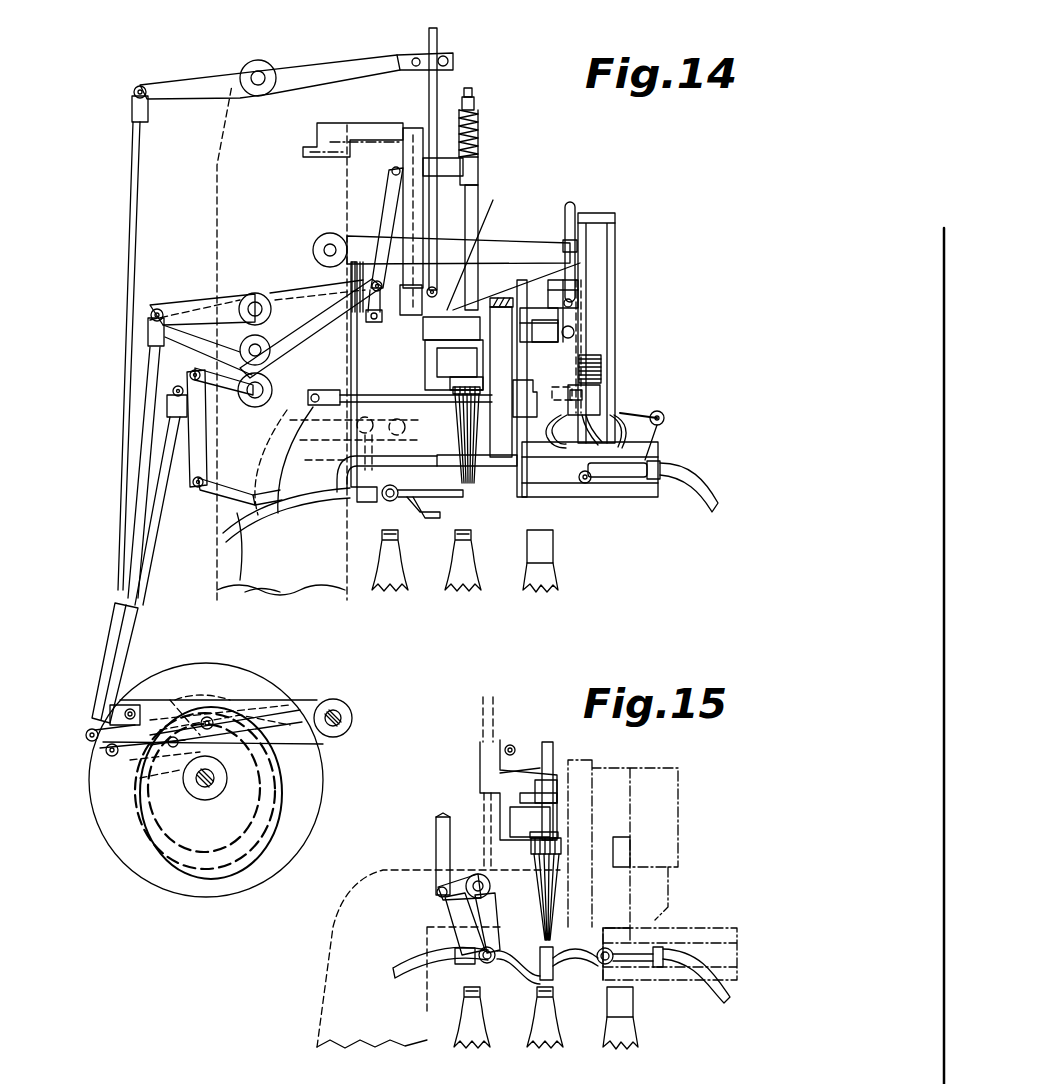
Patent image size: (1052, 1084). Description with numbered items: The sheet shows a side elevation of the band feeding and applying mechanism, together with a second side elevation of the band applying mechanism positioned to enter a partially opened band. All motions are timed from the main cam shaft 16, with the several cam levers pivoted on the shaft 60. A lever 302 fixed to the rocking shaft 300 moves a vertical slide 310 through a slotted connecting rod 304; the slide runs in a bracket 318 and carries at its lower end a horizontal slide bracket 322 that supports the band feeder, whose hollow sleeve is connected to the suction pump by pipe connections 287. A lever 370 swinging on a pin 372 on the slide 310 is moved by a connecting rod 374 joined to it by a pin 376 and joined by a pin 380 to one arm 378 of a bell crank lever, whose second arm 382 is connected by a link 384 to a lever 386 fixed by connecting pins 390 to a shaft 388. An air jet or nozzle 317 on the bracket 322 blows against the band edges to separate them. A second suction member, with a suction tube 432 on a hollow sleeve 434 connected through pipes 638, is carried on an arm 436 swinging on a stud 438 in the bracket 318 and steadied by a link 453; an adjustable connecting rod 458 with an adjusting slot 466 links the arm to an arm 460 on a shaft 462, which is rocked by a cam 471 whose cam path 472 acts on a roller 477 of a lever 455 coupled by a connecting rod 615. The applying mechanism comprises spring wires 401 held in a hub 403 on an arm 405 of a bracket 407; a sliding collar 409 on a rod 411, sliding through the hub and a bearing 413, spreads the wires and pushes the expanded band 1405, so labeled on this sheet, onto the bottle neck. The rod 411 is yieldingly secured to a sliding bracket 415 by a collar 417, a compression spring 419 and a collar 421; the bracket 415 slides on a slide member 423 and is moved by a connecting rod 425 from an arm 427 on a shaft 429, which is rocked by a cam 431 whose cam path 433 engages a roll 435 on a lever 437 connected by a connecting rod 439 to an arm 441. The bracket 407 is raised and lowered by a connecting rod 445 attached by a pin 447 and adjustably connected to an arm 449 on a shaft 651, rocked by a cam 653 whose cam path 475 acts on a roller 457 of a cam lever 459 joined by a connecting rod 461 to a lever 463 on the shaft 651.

In FIG. 14, the main cam shaft 16 is at (205, 780).
In FIG. 14, the shaft 60 is at (345, 710).
In FIG. 14, the pipe connections 287 is at (712, 475).
In FIG. 15, the pipe connections 287 is at (728, 1005).
In FIG. 14, the shaft 300 is at (325, 245).
In FIG. 14, the lever 302 is at (493, 243).
In FIG. 14, the slotted connecting rod 304 is at (572, 205).
In FIG. 15, the vertical slide 310 is at (668, 912).
In FIG. 14, the air jet or nozzle 317 is at (633, 410).
In FIG. 14, the bracket 318 is at (240, 560).
In FIG. 15, the bracket 318 is at (320, 1012).
In FIG. 14, the horizontal slide bracket 322 is at (647, 487).
In FIG. 15, the horizontal slide bracket 322 is at (667, 987).
In FIG. 14, the lever 370 is at (548, 380).
In FIG. 14, the pin 372 is at (577, 320).
In FIG. 14, the connecting rod 374 is at (353, 390).
In FIG. 14, the pin 376 is at (603, 392).
In FIG. 14, the arm of bell crank lever 378 is at (290, 450).
In FIG. 14, the pin 380 is at (325, 396).
In FIG. 14, the second arm of bell crank lever 382 is at (233, 490).
In FIG. 14, the link 384 is at (195, 452).
In FIG. 14, the lever 386 is at (250, 373).
In FIG. 14, the shaft 388 is at (258, 376).
In FIG. 14, the connecting pins 390 is at (190, 388).
In FIG. 14, the spring wires 401 is at (470, 485).
In FIG. 15, the spring wires 401 is at (553, 895).
In FIG. 14, the hub 403 is at (398, 428).
In FIG. 15, the hub 403 is at (565, 833).
In FIG. 14, the arm 405 is at (392, 412).
In FIG. 15, the arm 405 is at (515, 818).
In FIG. 14, the bracket 407 is at (465, 298).
In FIG. 15, the bracket 407 is at (505, 770).
In FIG. 14, the sliding collar 409 is at (587, 350).
In FIG. 15, the sliding collar 409 is at (560, 845).
In FIG. 14, the rod 411 is at (473, 205).
In FIG. 15, the rod 411 is at (553, 750).
In FIG. 14, the bearing 413 is at (547, 333).
In FIG. 15, the bearing 413 is at (557, 790).
In FIG. 14, the sliding bracket 415 is at (423, 150).
In FIG. 14, the collar 417 is at (477, 160).
In FIG. 14, the compression spring 419 is at (478, 125).
In FIG. 14, the collar 421 is at (474, 100).
In FIG. 14, the slide member 423 is at (385, 128).
In FIG. 14, the connecting rod 425 is at (388, 200).
In FIG. 14, the arm 427 is at (265, 362).
In FIG. 14, the shaft 429 is at (152, 318).
In FIG. 14, the cam 431 is at (135, 870).
In FIG. 14, the suction tube 432 is at (420, 527).
In FIG. 14, the cam path 433 is at (140, 790).
In FIG. 14, the hollow sleeve 434 is at (360, 530).
In FIG. 14, the roll 435 is at (318, 760).
In FIG. 14, the arm 436 is at (350, 508).
In FIG. 15, the arm 436 is at (440, 912).
In FIG. 14, the lever 437 is at (300, 710).
In FIG. 14, the stud 438 is at (300, 410).
In FIG. 14, the connecting rod 439 is at (72, 664).
In FIG. 14, the arm 441 is at (230, 348).
In FIG. 14, the connecting rod 445 is at (437, 85).
In FIG. 14, the pin 447 is at (440, 297).
In FIG. 14, the arm 449 is at (337, 58).
In FIG. 14, the link 453 is at (287, 480).
In FIG. 14, the lever 455 is at (260, 710).
In FIG. 14, the roller 457 is at (95, 732).
In FIG. 14, the adjustable connecting rod 458 is at (355, 310).
In FIG. 14, the cam lever 459 is at (130, 760).
In FIG. 14, the arm 460 is at (277, 293).
In FIG. 14, the connecting rod 461 is at (118, 570).
In FIG. 14, the shaft 462 is at (240, 297).
In FIG. 14, the lever 463 is at (160, 86).
In FIG. 14, the adjusting slot 466 is at (347, 280).
In FIG. 14, the cam 471 is at (225, 690).
In FIG. 14, the cam path 472 is at (185, 690).
In FIG. 14, the cam path 475 is at (140, 778).
In FIG. 14, the roller 477 is at (235, 700).
In FIG. 14, the connecting rod 615 is at (147, 418).
In FIG. 14, the pipes 638 is at (272, 575).
In FIG. 14, the shaft 651 is at (243, 66).
In FIG. 14, the cam 653 is at (192, 897).
In FIG. 14, the tube 1405 is at (553, 553).